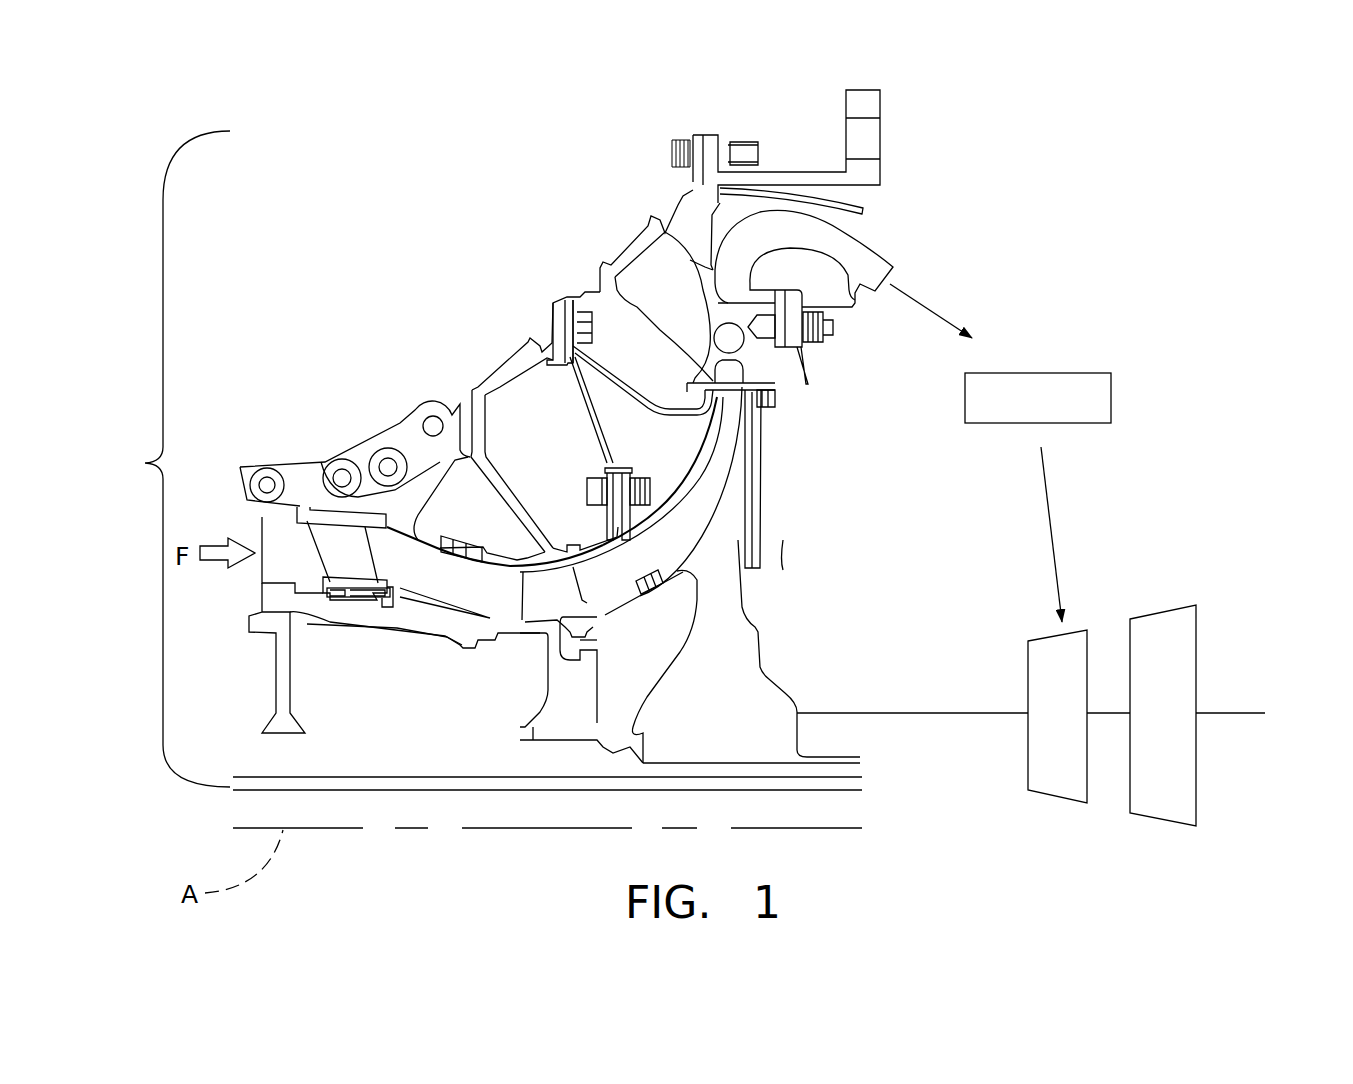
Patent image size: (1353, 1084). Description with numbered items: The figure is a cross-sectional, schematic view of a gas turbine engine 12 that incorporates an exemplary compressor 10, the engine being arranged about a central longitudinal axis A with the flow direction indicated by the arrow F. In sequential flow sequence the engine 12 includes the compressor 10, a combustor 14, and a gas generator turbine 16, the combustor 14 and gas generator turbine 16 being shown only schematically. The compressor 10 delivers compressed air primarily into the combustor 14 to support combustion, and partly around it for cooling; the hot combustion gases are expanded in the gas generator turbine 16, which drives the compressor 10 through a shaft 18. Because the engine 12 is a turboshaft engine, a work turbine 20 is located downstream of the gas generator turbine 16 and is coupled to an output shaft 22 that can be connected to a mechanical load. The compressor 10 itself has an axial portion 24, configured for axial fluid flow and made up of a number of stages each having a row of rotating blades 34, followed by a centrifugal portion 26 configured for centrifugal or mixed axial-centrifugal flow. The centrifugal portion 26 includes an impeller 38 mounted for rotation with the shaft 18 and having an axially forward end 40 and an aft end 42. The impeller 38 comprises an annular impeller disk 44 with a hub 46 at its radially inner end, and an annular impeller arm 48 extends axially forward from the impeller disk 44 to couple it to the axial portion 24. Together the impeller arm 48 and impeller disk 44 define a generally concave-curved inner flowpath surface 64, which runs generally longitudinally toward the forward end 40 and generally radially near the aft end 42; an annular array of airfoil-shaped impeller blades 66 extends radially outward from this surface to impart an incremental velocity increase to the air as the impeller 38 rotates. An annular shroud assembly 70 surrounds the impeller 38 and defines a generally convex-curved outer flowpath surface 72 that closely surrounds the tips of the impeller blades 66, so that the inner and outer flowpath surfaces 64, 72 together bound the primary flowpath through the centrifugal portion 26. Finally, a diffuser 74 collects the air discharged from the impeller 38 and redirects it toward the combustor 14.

The compressor 10 is at (522, 270).
The gas turbine engine 12 is at (163, 459).
The combustor 14 is at (1056, 409).
The gas generator turbine 16 is at (1079, 728).
The shaft 18 is at (898, 714).
The work turbine 20 is at (1182, 726).
The output shaft 22 is at (1205, 715).
The axial portion 24 is at (330, 642).
The centrifugal portion 26 is at (507, 684).
The blades 34 is at (303, 566).
The impeller 38 is at (746, 677).
The forward end 40 is at (608, 635).
The aft end 42 is at (760, 372).
The impeller disk 44 is at (732, 681).
The hub 46 is at (700, 748).
The impeller arm 48 is at (658, 585).
The inner flowpath surface 64 is at (708, 529).
The impeller blades 66 is at (667, 558).
The shroud assembly 70 is at (675, 440).
The outer flowpath surface 72 is at (724, 451).
The diffuser 74 is at (718, 312).